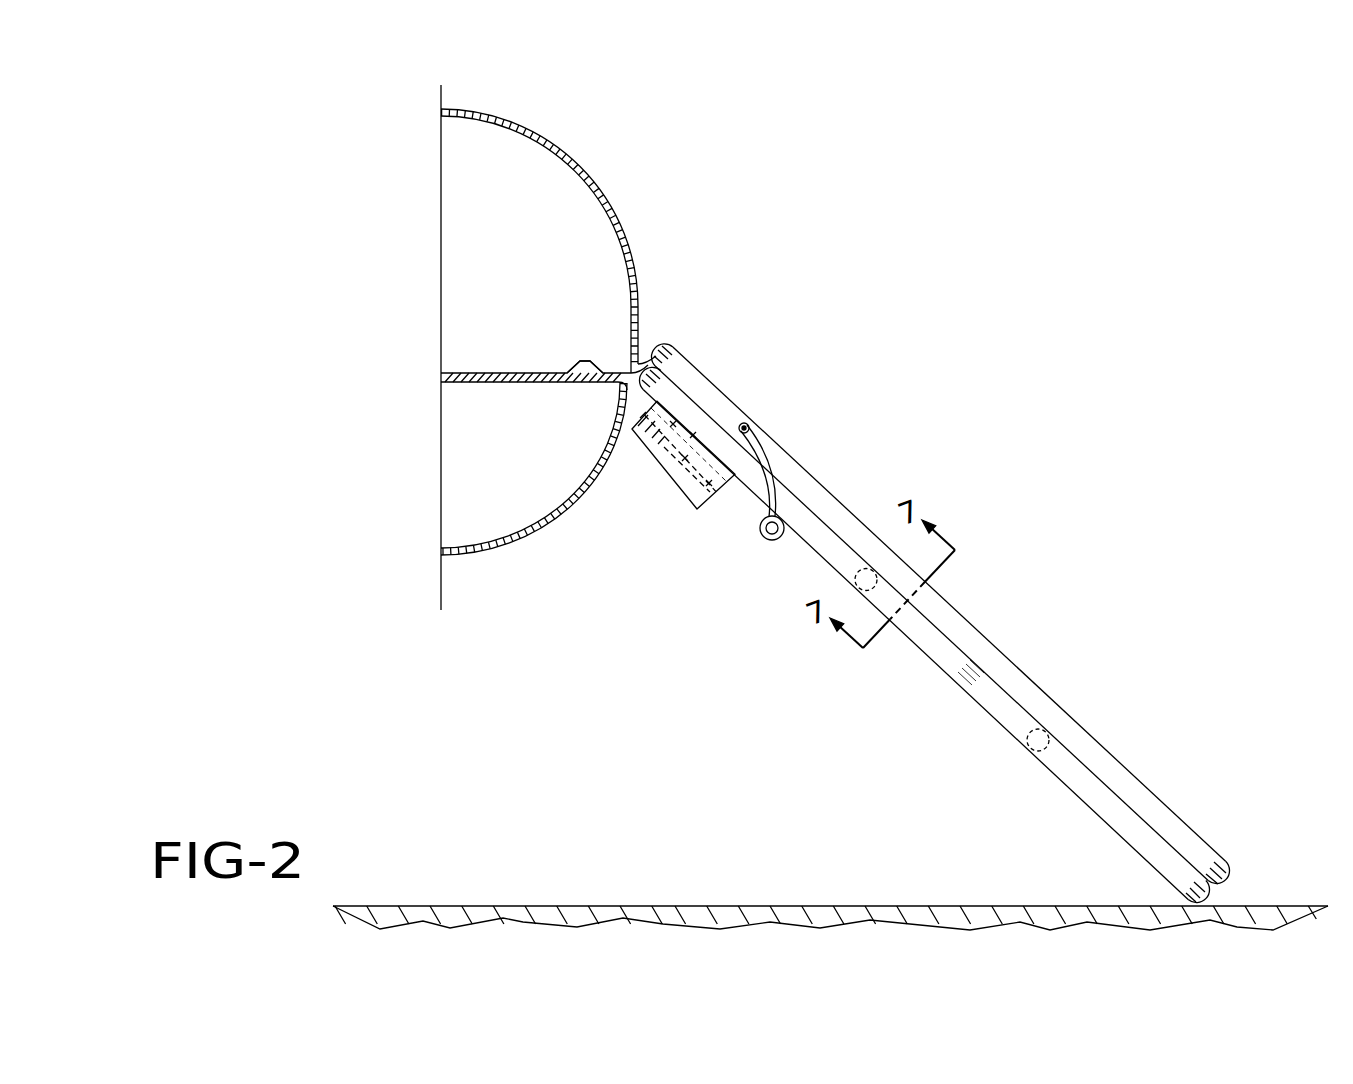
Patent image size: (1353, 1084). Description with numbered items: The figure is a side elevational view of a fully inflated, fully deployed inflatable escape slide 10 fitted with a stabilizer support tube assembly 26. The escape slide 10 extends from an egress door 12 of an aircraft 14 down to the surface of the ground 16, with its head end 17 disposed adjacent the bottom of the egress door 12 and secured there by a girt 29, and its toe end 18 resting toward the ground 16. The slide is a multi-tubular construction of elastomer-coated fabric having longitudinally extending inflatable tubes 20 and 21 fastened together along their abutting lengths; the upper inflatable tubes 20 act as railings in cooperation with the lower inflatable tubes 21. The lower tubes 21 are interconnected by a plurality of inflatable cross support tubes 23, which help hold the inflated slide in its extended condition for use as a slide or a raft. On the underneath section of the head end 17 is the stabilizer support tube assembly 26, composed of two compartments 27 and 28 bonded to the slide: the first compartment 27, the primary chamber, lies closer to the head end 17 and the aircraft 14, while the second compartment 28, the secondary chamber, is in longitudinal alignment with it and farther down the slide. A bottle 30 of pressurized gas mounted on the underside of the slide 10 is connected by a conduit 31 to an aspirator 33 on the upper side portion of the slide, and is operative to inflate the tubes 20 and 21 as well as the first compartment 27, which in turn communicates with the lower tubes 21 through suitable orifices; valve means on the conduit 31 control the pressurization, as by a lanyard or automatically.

The inflatable escape slide 10 is at (1064, 472).
The egress door 12 is at (638, 296).
The aircraft 14 is at (608, 150).
The ground 16 is at (560, 906).
The head end 17 is at (678, 347).
The toe end 18 is at (1230, 873).
The upper inflatable tube 20 is at (924, 634).
The lower inflatable tube 21 is at (981, 601).
The inflatable cross support tube 23 is at (1032, 752).
The stabilizer support tube assembly 26 is at (640, 481).
The first compartment 27 is at (650, 448).
The second compartment 28 is at (696, 508).
The girt 29 is at (611, 367).
The bottle of pressurized gas 30 is at (766, 540).
The conduit 31 is at (805, 503).
The aspirator 33 is at (746, 427).